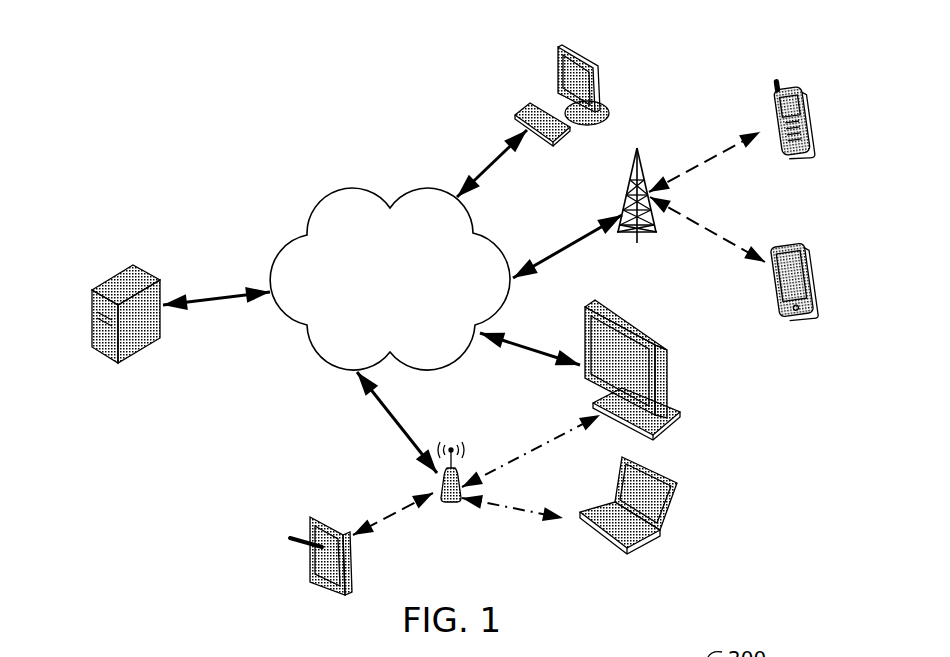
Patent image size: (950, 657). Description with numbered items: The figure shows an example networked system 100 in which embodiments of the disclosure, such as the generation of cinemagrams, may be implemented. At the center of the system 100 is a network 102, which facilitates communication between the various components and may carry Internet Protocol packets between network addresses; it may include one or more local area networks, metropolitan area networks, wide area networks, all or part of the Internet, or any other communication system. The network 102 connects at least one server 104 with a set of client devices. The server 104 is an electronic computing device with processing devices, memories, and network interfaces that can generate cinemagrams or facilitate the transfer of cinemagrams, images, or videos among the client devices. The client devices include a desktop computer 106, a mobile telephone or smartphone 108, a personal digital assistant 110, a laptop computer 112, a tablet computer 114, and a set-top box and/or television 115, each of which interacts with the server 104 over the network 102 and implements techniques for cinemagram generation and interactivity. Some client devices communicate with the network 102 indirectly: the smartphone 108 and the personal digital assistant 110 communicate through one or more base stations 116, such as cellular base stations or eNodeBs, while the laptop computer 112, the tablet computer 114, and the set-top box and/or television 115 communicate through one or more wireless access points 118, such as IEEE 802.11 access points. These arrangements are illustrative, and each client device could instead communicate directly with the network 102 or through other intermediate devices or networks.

The networked system 100 is at (240, 70).
The network 102 is at (317, 205).
The server 104 is at (105, 280).
The desktop computer 106 is at (577, 128).
The mobile telephone or smartphone 108 is at (810, 108).
The personal digital assistant (PDA) 110 is at (812, 257).
The laptop computer 112 is at (655, 536).
The tablet computer 114 is at (308, 520).
The set-top box and/or television 115 is at (682, 414).
The base station 116 is at (658, 233).
The wireless access point 118 is at (462, 483).